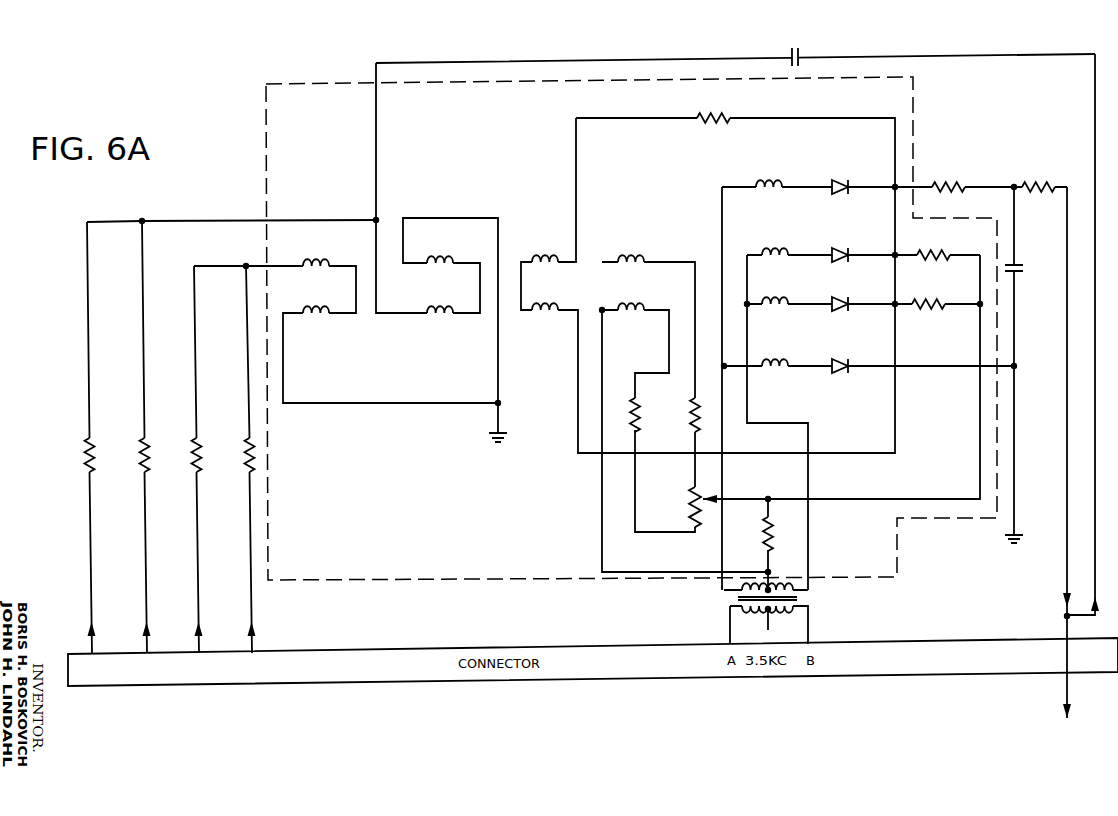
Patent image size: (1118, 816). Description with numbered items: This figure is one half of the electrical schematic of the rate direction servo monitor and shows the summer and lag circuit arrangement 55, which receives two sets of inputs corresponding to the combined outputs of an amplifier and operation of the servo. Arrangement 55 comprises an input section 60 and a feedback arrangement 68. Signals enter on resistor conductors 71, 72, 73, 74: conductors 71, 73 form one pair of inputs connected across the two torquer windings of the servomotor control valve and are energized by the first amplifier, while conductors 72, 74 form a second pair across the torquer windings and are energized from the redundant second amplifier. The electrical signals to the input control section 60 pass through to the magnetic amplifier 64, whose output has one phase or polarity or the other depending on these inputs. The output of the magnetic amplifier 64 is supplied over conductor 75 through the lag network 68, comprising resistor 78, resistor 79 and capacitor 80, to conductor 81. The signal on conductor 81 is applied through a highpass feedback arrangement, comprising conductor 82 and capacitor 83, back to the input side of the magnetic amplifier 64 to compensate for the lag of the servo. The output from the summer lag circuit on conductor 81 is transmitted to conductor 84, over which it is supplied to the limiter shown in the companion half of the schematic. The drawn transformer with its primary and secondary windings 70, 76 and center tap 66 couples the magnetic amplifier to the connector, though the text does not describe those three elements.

The summer and lag circuit arrangement 55 is at (308, 57).
The input section 60 is at (130, 505).
The magnetic amplifier 64 is at (935, 550).
The center tap of transformer secondary 66 is at (765, 617).
The lag network 68 is at (1044, 106).
The transformer primary winding 70 is at (733, 593).
The resistor conductor 71 is at (92, 567).
The resistor conductor 72 is at (147, 565).
The resistor conductor 73 is at (200, 563).
The resistor conductor 74 is at (253, 600).
The conductor 75 is at (922, 183).
The transformer secondary winding 76 is at (733, 605).
The resistor 78 is at (965, 183).
The resistor 79 is at (1027, 183).
The capacitor 80 is at (1017, 263).
The conductor 81 is at (1067, 367).
The conductor 82 is at (1095, 463).
The capacitor 83 is at (798, 54).
The conductor 84 is at (1072, 687).